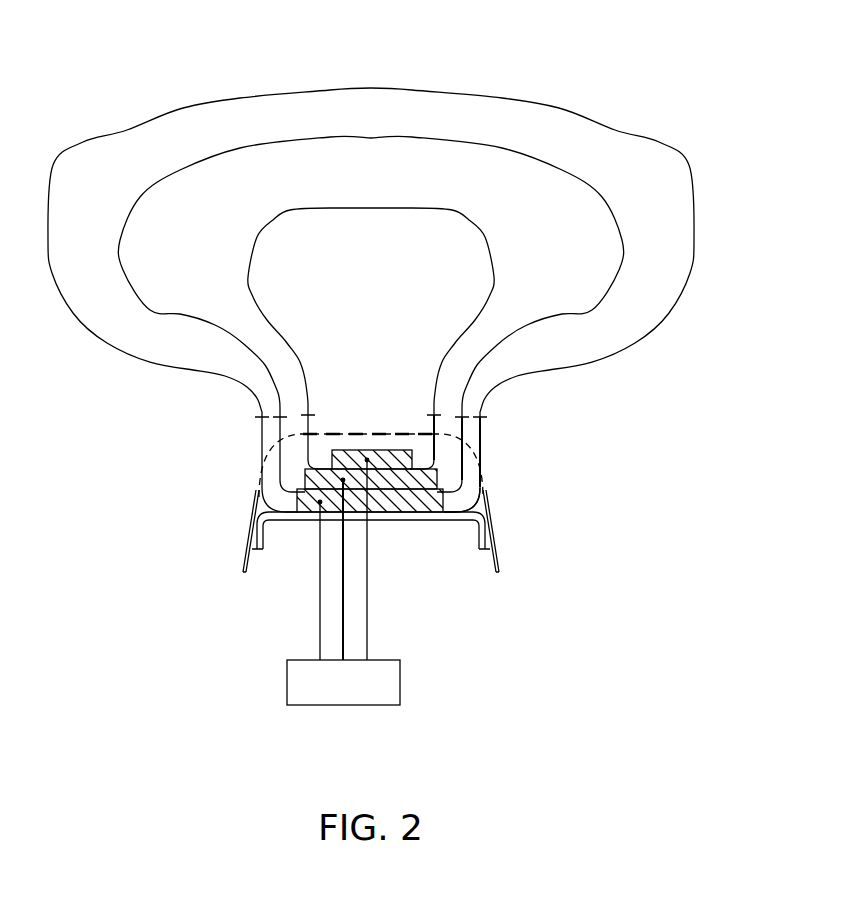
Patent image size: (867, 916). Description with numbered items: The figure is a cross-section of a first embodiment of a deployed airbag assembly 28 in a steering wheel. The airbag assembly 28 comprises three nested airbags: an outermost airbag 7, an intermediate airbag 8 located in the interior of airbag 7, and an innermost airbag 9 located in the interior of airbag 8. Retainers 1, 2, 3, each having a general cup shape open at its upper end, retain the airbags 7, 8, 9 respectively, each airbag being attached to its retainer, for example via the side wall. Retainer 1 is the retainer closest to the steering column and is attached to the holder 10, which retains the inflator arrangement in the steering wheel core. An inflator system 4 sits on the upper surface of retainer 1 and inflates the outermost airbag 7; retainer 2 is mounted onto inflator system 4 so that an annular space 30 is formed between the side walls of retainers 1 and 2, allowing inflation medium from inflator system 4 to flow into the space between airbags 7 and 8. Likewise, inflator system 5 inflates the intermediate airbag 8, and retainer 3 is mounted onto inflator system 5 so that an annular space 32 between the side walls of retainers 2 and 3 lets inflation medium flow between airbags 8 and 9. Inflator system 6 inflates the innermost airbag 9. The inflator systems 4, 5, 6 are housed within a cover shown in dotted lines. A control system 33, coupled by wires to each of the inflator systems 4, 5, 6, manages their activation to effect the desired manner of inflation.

The retainer 1 is at (483, 455).
The retainer 2 is at (482, 477).
The retainer 3 is at (307, 437).
The inflator system 4 is at (432, 502).
The inflator system 5 is at (407, 482).
The inflator system 6 is at (378, 462).
The outermost airbag 7 is at (552, 107).
The intermediate airbag 8 is at (372, 137).
The innermost airbag 9 is at (317, 211).
The holder 10 is at (310, 520).
The airbag assembly 28 is at (353, 432).
The annular space 30 is at (472, 440).
The annular space 32 is at (450, 435).
The control system 33 is at (390, 682).